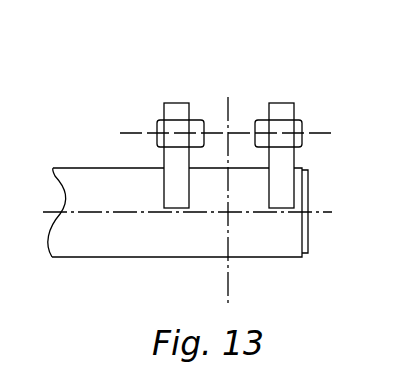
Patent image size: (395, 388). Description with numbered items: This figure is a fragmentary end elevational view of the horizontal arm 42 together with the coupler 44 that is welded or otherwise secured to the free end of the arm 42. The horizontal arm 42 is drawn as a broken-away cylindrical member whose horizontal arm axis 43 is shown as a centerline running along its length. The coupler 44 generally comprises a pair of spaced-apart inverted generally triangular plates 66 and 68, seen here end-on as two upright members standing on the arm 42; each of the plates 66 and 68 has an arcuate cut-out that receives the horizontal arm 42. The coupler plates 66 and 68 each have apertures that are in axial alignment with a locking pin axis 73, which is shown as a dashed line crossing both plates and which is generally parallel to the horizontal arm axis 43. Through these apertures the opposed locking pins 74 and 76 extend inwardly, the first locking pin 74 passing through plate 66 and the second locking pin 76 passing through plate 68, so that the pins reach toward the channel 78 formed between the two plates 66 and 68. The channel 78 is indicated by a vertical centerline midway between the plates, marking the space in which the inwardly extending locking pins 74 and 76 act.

The horizontal arm 42 is at (158, 257).
The horizontal arm axis 43 is at (133, 212).
The coupler 44 is at (181, 51).
The triangular plate 66 is at (176, 102).
The triangular plate 68 is at (283, 102).
The locking pin axis 73 is at (320, 137).
The locking pin 74 is at (158, 123).
The locking pin 76 is at (302, 123).
The channel 78 is at (238, 116).